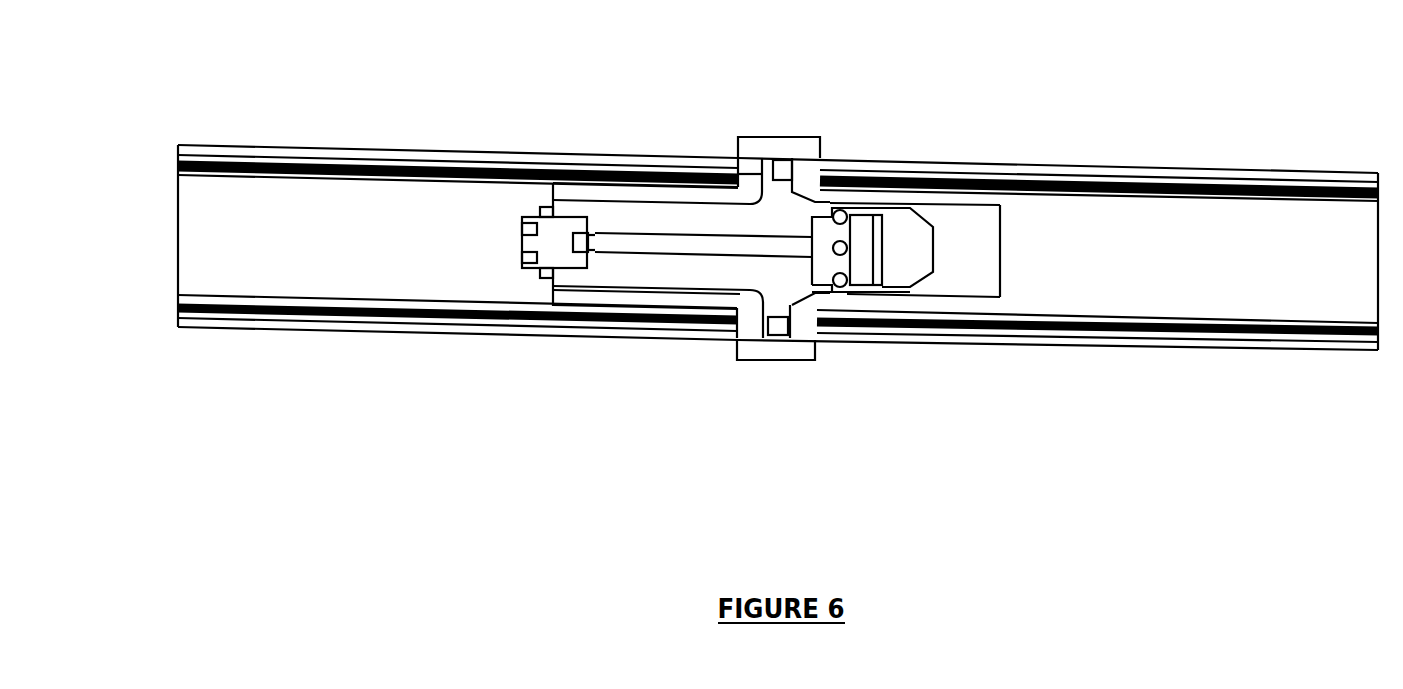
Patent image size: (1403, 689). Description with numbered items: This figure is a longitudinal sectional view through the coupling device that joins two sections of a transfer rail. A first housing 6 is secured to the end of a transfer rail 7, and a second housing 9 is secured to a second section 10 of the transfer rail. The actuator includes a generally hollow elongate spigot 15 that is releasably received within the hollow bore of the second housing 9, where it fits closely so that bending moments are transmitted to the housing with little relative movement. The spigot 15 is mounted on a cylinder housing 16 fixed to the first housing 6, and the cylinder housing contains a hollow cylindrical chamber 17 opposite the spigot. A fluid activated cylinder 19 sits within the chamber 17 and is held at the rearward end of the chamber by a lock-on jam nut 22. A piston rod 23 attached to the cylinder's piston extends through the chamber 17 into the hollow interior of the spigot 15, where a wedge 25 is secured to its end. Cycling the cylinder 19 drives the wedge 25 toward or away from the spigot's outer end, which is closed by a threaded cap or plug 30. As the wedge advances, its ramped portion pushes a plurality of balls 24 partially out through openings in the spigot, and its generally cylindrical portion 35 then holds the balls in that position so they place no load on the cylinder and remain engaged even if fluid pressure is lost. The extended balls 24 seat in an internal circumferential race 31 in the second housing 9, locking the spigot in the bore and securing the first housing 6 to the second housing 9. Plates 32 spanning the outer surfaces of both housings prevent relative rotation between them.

The first housing 6 is at (570, 298).
The transfer rail 7 is at (441, 332).
The second housing 9 is at (973, 305).
The second section of transfer rail 10 is at (1229, 352).
The spigot 15 is at (882, 212).
The cylinder housing 16 is at (762, 297).
The chamber 17 is at (645, 272).
The fluid activated cylinder 19 is at (528, 240).
The jam nut 22 is at (549, 210).
The piston rod 23 is at (677, 247).
The balls 24 is at (846, 205).
The wedge 25 is at (820, 213).
The cap or plug 30 is at (908, 238).
The internal circumferential race 31 is at (852, 290).
The plates 32 is at (762, 147).
The cylindrical portion 35 is at (821, 297).